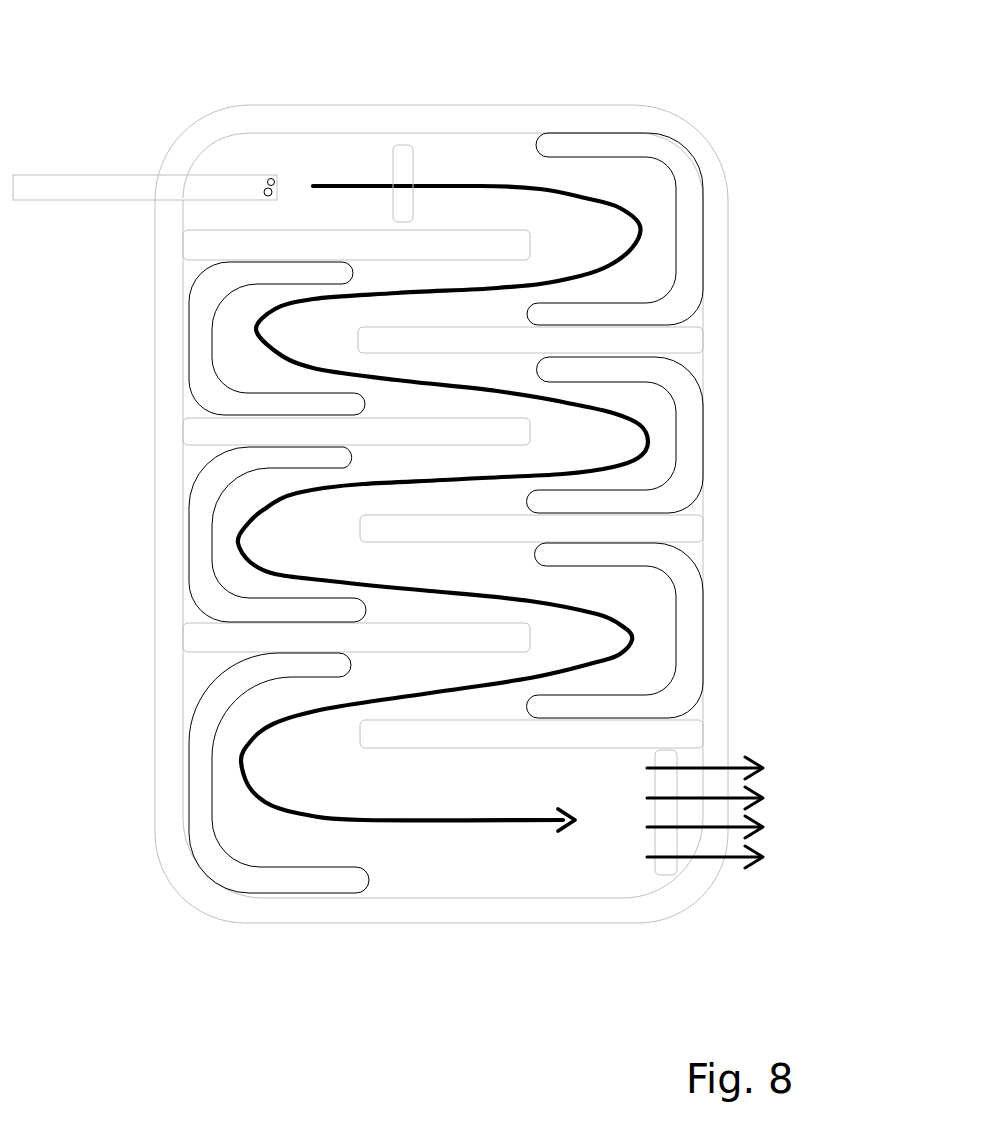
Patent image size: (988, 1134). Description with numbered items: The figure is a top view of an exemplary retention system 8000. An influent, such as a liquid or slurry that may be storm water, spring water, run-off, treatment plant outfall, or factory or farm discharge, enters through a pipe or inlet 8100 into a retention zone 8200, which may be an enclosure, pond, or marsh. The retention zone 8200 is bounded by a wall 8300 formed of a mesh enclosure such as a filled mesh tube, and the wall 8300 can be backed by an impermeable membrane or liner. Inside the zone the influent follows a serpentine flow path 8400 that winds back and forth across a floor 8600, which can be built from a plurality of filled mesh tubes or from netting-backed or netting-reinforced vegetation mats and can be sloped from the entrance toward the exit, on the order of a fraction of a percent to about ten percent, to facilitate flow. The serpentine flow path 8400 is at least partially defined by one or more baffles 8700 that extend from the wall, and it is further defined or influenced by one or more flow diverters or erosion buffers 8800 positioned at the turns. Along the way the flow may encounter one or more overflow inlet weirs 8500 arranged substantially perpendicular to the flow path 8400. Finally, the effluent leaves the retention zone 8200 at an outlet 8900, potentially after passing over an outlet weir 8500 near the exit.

The retention system 8000 is at (119, 73).
The inlet 8100 is at (107, 182).
The retention zone 8200 is at (277, 151).
The wall 8300 is at (306, 109).
The serpentine flow path 8400 is at (360, 163).
The overflow inlet weir 8500 is at (410, 152).
The floor 8600 is at (487, 148).
The baffle 8700 is at (501, 237).
The flow diverter and/or erosion buffer 8800 is at (659, 150).
The outlet 8900 is at (699, 880).